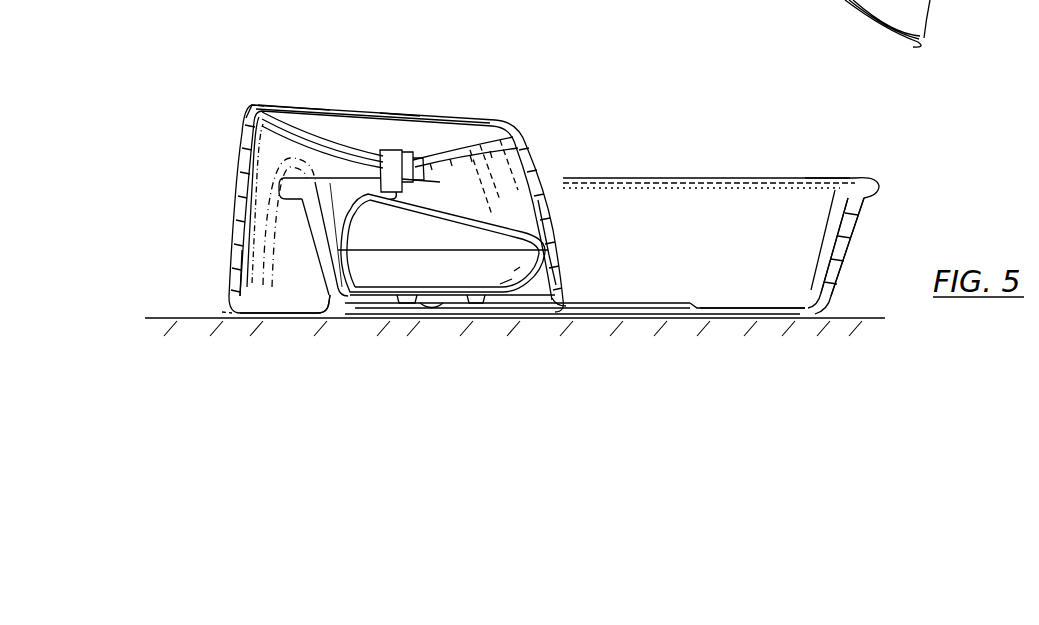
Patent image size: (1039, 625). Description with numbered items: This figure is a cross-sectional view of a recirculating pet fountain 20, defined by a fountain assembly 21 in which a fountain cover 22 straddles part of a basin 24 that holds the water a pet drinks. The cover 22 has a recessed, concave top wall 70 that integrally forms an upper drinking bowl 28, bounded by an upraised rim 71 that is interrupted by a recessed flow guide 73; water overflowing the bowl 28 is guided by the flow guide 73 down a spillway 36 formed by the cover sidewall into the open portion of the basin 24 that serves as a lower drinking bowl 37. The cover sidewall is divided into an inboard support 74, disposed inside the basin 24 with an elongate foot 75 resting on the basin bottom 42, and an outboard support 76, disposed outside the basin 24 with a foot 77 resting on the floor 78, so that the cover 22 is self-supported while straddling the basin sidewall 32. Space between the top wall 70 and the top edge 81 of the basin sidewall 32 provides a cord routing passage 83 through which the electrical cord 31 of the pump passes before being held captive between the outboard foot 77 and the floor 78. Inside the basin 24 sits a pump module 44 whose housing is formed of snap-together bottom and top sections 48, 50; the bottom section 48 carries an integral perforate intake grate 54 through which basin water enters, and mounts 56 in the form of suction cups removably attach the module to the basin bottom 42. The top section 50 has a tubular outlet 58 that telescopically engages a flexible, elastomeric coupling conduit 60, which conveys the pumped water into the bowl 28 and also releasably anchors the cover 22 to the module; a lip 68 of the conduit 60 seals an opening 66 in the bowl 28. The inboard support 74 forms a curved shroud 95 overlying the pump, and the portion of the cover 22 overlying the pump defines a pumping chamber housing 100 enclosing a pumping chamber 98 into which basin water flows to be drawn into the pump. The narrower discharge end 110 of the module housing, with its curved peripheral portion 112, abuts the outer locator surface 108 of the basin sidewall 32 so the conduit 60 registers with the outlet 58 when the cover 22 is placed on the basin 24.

The recirculating pet fountain 20 is at (170, 188).
The fountain assembly 21 is at (241, 70).
The fountain cover 22 is at (249, 106).
The basin 24 is at (888, 183).
The upper drinking bowl 28 is at (307, 100).
The electrical cord 31 is at (218, 312).
The basin sidewall 32 is at (321, 258).
The spillway 36 is at (567, 200).
The lower drinking bowl 37 is at (826, 152).
The basin bottom 42 is at (765, 303).
The pump module 44 is at (546, 168).
The bottom housing section 48 is at (443, 243).
The top housing section 50 is at (428, 268).
The perforate intake grate 54 is at (531, 300).
The mounts 56 is at (397, 301).
The tubular outlet 58 is at (393, 192).
The coupling conduit 60 is at (403, 137).
The opening 66 is at (425, 166).
The lip 68 is at (410, 160).
The top wall 70 is at (225, 258).
The upraised rim 71 is at (388, 112).
The recessed flow guide 73 is at (491, 192).
The inboard support 74 is at (559, 224).
The foot 75 is at (580, 300).
The outboard support 76 is at (230, 180).
The outboard foot 77 is at (290, 323).
The floor 78 is at (147, 319).
The top edge 81 is at (435, 148).
The cord routing passage 83 is at (321, 199).
The shroud 95 is at (550, 243).
The pumping chamber 98 is at (543, 267).
The pumping chamber housing 100 is at (557, 181).
The outer locator surface 108 is at (325, 185).
The narrower discharge end 110 is at (349, 177).
The curved peripheral portion 112 is at (343, 243).